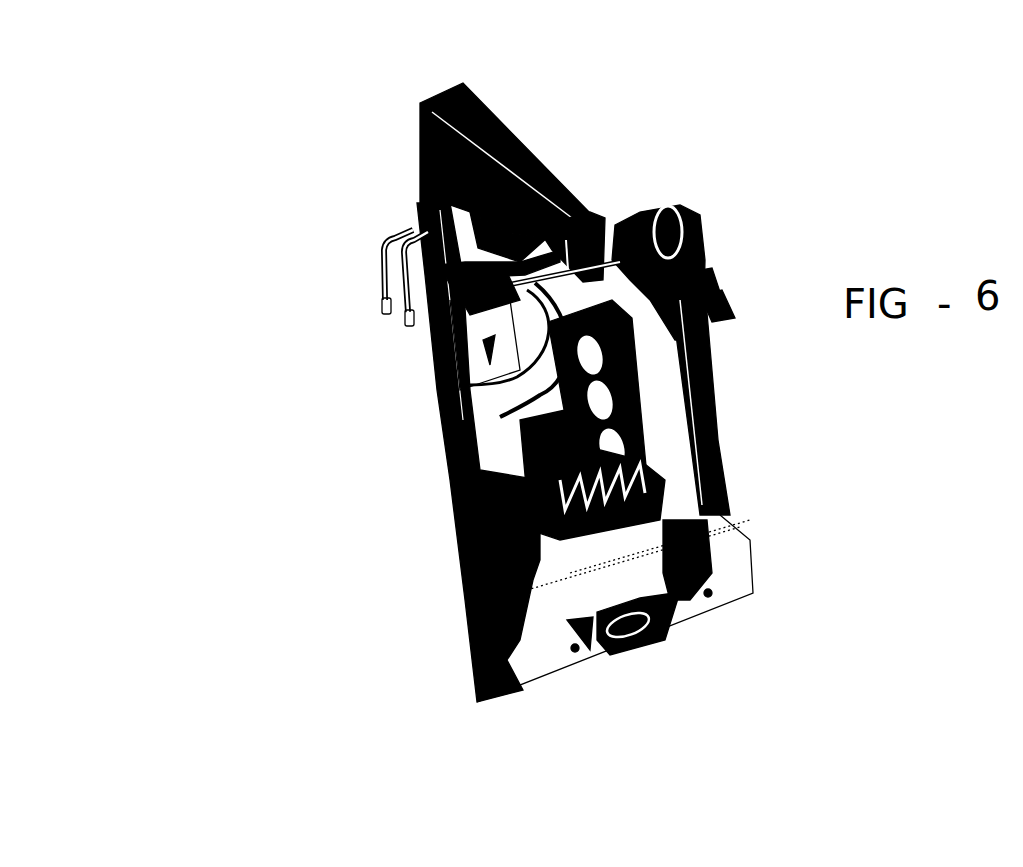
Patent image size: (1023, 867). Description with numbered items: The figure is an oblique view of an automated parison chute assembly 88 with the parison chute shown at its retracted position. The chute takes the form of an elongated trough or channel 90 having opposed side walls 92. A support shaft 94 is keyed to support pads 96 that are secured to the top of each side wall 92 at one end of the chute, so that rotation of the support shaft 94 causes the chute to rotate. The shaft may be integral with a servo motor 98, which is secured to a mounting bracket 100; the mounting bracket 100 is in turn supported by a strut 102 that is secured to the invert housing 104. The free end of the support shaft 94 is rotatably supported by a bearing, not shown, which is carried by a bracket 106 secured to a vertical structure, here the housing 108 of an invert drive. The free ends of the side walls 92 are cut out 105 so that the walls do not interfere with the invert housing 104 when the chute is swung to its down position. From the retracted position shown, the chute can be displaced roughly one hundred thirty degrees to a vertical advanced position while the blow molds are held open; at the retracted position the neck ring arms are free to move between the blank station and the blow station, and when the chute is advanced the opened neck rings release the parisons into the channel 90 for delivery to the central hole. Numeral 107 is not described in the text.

The automated parison chute assembly 88 is at (575, 213).
The elongated trough or channel 90 is at (507, 123).
The side walls 92 is at (450, 173).
The support shaft 94 is at (445, 392).
The support pads 96 is at (703, 280).
The servo motor 98 is at (690, 233).
The mounting bracket 100 is at (707, 287).
The strut 102 is at (703, 393).
The invert housing 104 is at (720, 480).
The cut out 105 is at (480, 328).
The bracket 106 is at (443, 373).
The tubes 107 is at (430, 140).
The housing of an invert drive 108 is at (443, 480).